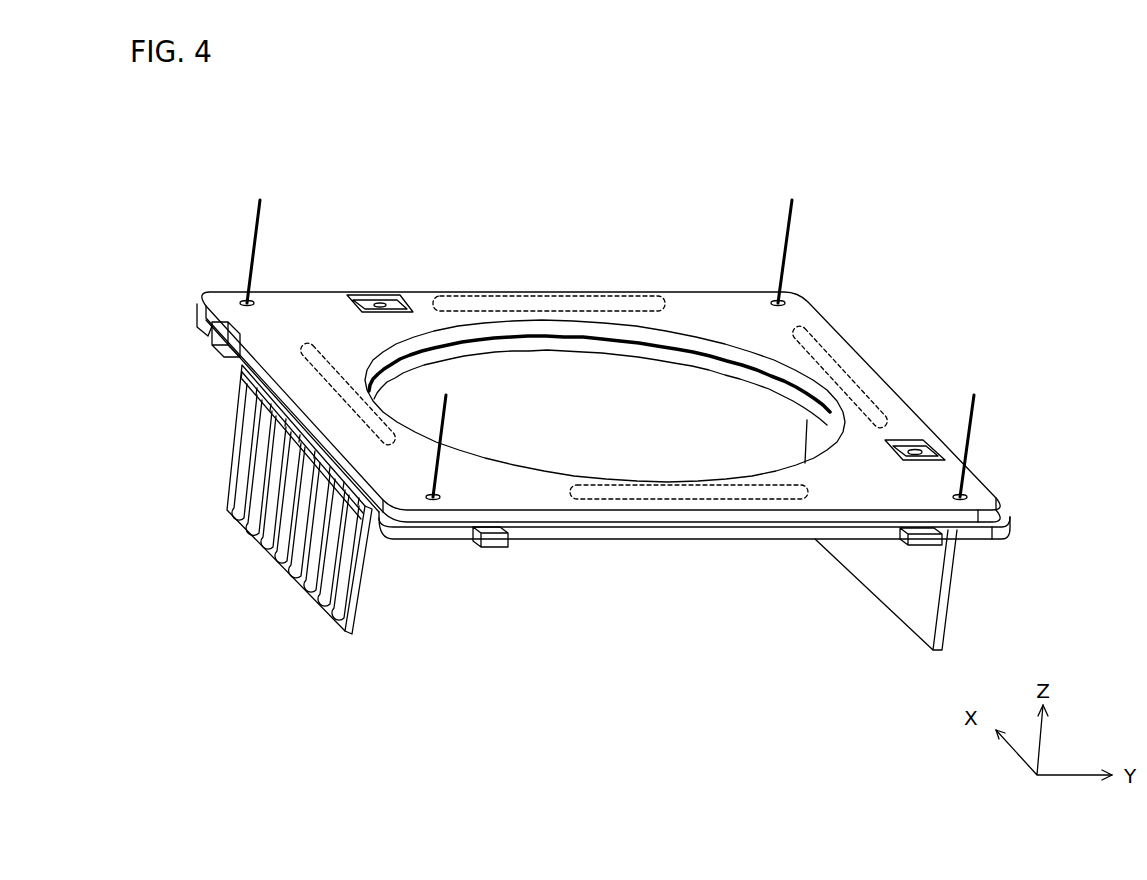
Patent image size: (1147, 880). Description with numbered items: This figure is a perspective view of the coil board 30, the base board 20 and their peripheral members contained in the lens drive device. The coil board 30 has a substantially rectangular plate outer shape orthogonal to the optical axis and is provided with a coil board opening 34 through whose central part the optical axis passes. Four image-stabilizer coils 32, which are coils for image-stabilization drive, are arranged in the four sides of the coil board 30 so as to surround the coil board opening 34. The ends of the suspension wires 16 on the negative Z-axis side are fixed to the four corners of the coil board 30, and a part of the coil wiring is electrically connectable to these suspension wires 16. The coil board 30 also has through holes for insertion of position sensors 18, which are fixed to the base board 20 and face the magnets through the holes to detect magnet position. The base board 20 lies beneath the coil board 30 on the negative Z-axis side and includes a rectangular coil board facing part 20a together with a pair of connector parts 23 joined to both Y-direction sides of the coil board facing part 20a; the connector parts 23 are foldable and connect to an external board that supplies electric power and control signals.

The suspension wire 16 is at (252, 238).
The position sensor 18 is at (367, 298).
The base board 20 is at (1010, 529).
The coil board facing part 20a is at (818, 540).
The connector part 23 is at (302, 545).
The coil board 30 is at (995, 489).
The image-stabilizer coil 32 is at (522, 296).
The coil board opening 34 is at (639, 373).